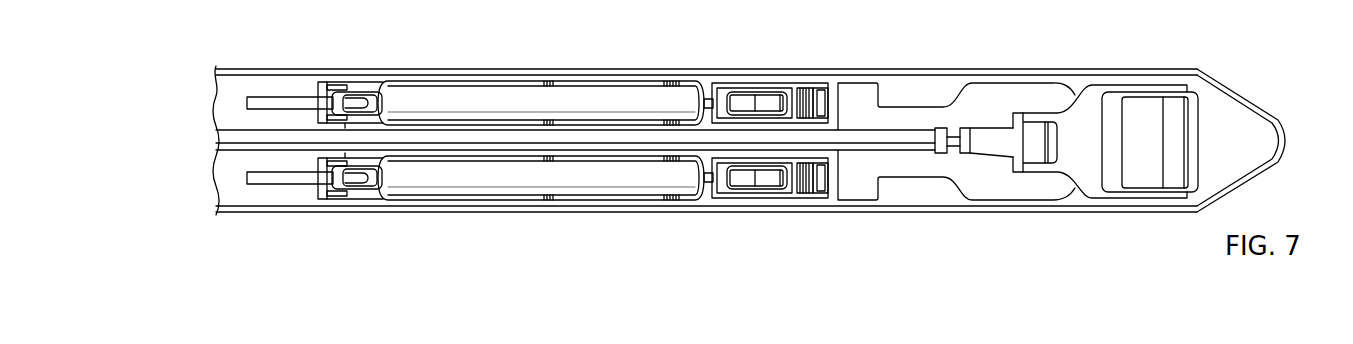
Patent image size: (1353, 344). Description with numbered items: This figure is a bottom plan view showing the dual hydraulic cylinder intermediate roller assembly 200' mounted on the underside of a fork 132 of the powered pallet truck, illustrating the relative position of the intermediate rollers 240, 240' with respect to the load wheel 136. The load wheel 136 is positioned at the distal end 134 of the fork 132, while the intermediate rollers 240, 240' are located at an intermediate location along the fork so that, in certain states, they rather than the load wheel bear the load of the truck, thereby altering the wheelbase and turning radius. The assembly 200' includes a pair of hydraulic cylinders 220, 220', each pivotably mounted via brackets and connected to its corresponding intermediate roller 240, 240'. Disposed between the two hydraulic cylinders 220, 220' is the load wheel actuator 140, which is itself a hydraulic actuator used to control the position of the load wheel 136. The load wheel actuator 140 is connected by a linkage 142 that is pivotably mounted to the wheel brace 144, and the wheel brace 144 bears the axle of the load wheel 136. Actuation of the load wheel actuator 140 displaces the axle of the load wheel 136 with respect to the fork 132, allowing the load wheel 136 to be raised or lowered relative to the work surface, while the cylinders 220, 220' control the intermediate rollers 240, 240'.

The fork 132 is at (412, 212).
The distal end 134 is at (1256, 151).
The load wheel 136 is at (1190, 108).
The load wheel actuator 140 is at (900, 138).
The linkage 142 is at (1002, 138).
The wheel brace 144 is at (1090, 112).
The hydraulic cylinder 220 is at (480, 81).
The intermediate roller 240 is at (766, 79).
The intermediate roller assembly 200' is at (537, 202).
The hydraulic cylinder 220' is at (480, 201).
The intermediate roller 240' is at (770, 204).